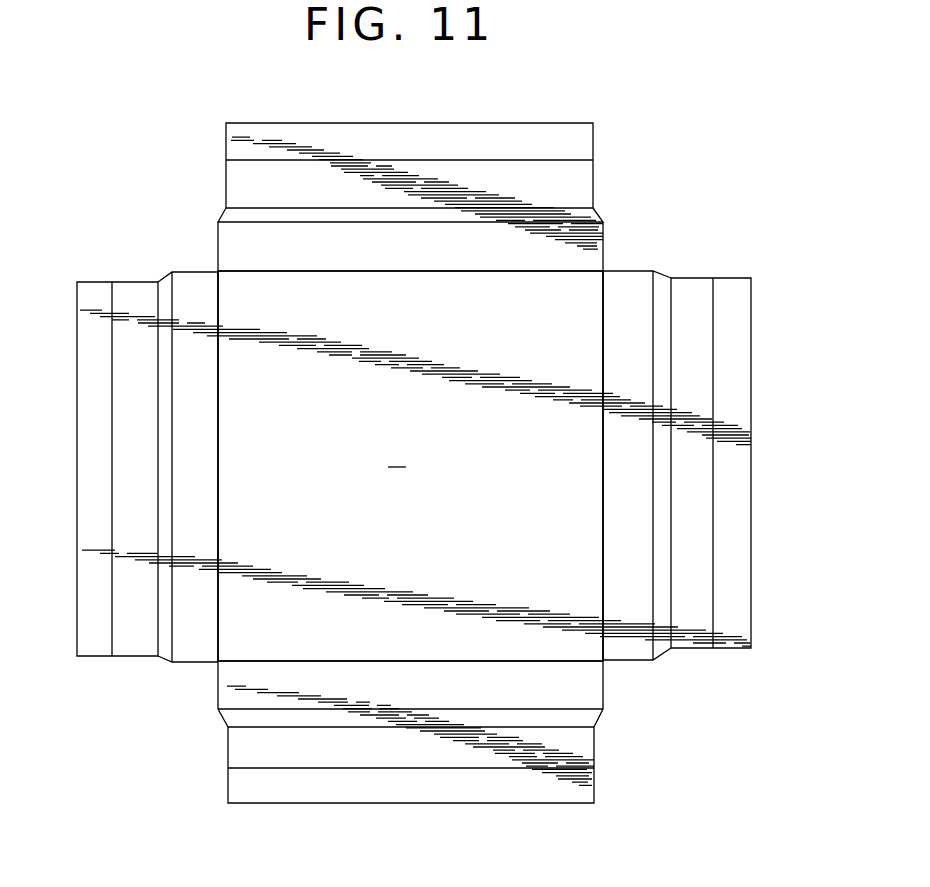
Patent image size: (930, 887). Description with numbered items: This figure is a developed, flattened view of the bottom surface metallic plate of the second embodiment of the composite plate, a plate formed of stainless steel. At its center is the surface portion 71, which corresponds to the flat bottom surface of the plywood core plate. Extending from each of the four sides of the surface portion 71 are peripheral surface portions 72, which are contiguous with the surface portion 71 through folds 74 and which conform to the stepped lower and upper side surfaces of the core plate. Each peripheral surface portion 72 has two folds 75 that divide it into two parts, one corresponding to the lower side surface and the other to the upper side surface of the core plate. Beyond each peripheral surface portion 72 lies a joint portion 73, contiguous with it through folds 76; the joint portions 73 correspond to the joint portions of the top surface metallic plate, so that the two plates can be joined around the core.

The surface portion 71 is at (578, 283).
The peripheral surface portions 72 is at (570, 237).
The joint portions 73 is at (345, 135).
The folds 74 is at (380, 271).
The folds 75 is at (365, 221).
The folds 76 is at (487, 158).